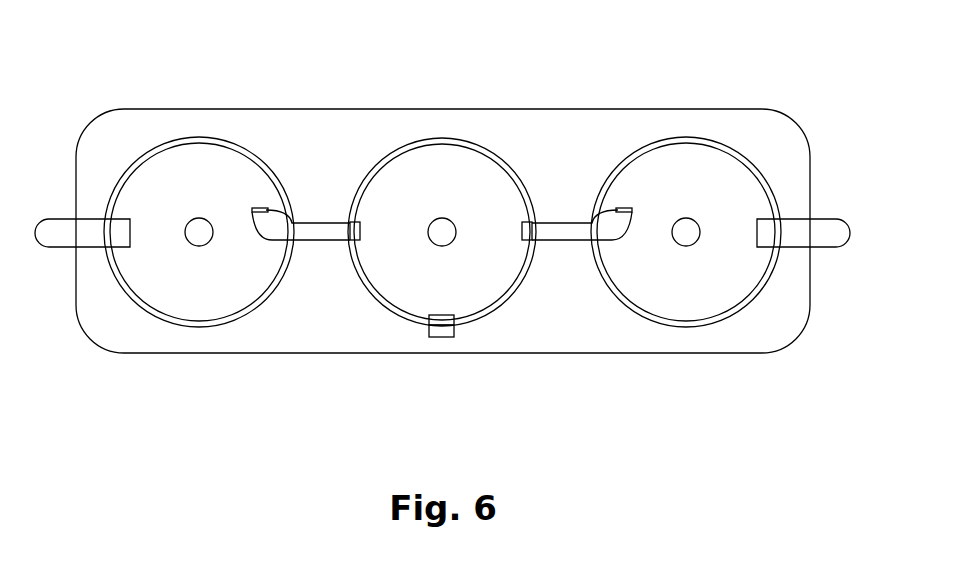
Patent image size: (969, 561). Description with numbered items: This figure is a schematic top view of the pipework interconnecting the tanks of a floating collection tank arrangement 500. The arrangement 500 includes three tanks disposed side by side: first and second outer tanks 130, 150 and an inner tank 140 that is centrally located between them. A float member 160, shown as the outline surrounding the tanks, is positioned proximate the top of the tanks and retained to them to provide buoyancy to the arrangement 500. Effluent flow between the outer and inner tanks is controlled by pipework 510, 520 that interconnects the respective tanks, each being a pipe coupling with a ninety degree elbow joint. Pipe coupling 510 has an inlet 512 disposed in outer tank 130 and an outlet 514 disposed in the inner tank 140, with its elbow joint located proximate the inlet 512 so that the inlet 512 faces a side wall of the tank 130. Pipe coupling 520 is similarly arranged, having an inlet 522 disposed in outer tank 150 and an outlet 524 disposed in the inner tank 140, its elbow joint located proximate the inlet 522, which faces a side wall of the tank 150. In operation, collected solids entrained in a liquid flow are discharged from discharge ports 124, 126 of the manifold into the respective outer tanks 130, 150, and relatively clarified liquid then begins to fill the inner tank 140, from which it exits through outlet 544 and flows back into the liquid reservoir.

The floating collection tank arrangement 500 is at (203, 78).
The discharge port 124 is at (130, 228).
The discharge port 126 is at (757, 228).
The first outer tank 130 is at (252, 160).
The inner tank 140 is at (442, 145).
The second outer tank 150 is at (687, 145).
The float member 160 is at (550, 135).
The pipe coupling 510 is at (315, 300).
The inlet 512 is at (260, 212).
The outlet 514 is at (363, 232).
The pipe coupling 520 is at (571, 312).
The inlet 522 is at (632, 214).
The outlet 524 is at (520, 228).
The outlet 544 is at (443, 337).